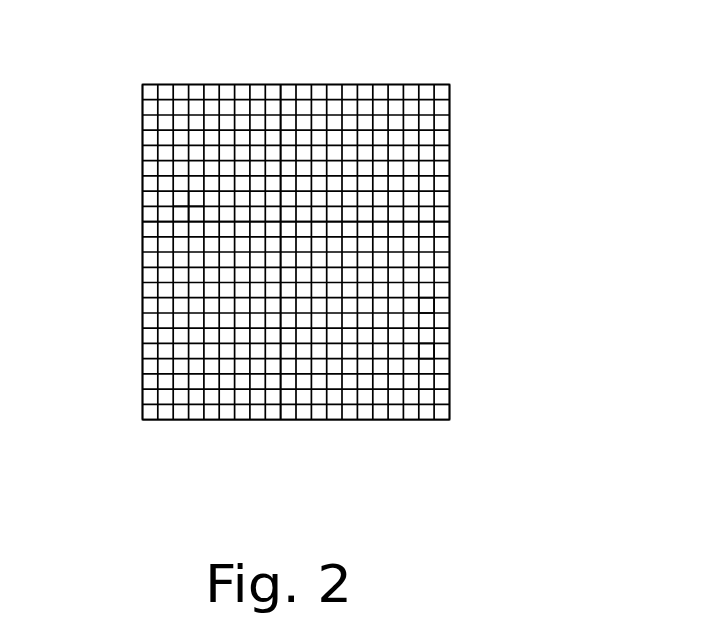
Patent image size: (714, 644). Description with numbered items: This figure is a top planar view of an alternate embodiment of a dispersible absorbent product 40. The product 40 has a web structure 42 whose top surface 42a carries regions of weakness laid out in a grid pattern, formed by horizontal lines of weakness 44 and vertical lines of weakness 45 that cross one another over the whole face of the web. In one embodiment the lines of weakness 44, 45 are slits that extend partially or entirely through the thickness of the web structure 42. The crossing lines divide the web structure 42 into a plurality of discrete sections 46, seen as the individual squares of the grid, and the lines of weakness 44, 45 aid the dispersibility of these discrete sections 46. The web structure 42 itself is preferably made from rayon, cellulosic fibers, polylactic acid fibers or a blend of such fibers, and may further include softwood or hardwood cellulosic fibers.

The dispersible absorbent product 40 is at (482, 133).
The web structure 42 is at (180, 85).
The top surface 42a is at (180, 222).
The horizontal lines of weakness 44 is at (287, 173).
The vertical lines of weakness 45 is at (410, 228).
The discrete sections 46 is at (410, 352).